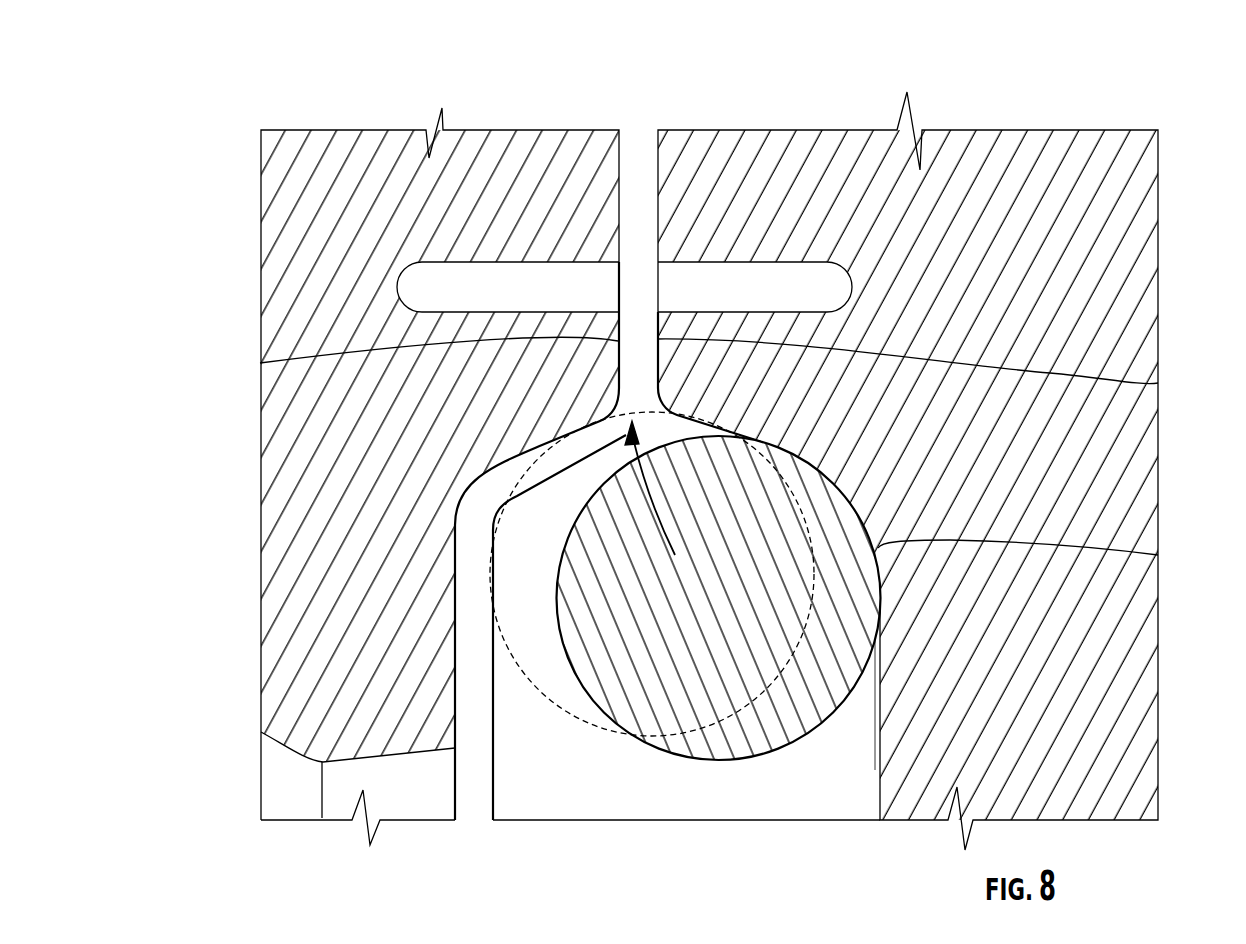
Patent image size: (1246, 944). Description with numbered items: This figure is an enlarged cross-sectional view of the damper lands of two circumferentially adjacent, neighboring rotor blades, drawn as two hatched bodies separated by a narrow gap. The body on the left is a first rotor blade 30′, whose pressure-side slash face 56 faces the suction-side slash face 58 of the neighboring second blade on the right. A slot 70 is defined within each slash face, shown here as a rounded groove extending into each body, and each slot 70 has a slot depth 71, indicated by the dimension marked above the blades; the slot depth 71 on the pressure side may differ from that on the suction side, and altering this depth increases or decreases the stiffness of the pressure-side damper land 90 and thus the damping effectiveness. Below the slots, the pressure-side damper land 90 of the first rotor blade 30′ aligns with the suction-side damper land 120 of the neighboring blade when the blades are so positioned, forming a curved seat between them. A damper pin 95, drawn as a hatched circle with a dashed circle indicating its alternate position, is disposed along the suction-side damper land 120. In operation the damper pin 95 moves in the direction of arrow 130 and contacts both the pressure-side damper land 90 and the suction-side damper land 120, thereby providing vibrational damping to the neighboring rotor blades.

The first rotor blade 30′ is at (272, 130).
The pressure-side slash face 56 is at (260, 363).
The suction-side slash face 58 is at (1158, 383).
The slot 70 is at (535, 276).
The slot depth 71 is at (619, 38).
The pressure-side damper land 90 is at (465, 505).
The damper pin 95 is at (725, 600).
The suction-side damper land 120 is at (1158, 555).
The arrow 130 is at (650, 512).